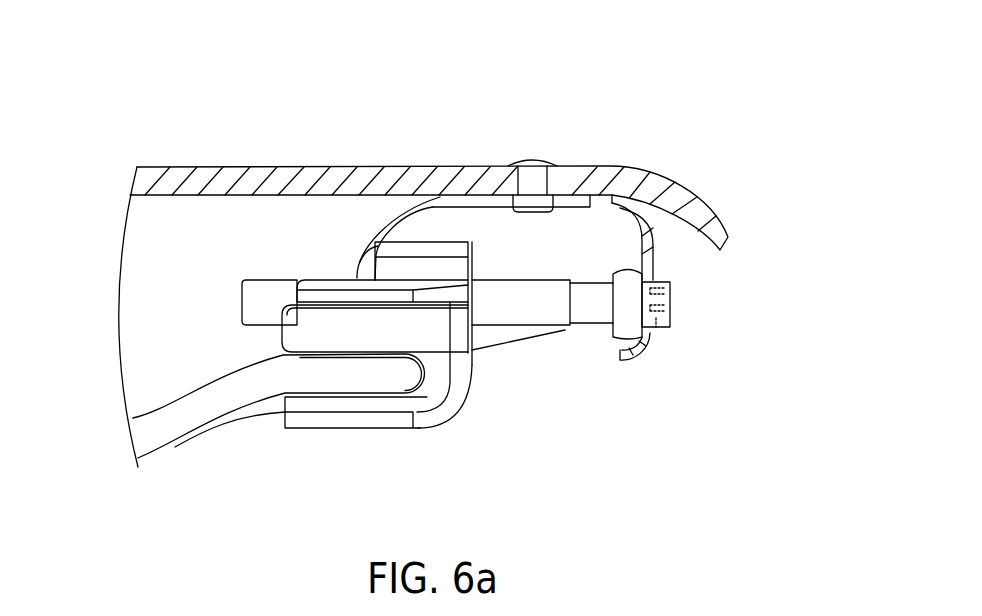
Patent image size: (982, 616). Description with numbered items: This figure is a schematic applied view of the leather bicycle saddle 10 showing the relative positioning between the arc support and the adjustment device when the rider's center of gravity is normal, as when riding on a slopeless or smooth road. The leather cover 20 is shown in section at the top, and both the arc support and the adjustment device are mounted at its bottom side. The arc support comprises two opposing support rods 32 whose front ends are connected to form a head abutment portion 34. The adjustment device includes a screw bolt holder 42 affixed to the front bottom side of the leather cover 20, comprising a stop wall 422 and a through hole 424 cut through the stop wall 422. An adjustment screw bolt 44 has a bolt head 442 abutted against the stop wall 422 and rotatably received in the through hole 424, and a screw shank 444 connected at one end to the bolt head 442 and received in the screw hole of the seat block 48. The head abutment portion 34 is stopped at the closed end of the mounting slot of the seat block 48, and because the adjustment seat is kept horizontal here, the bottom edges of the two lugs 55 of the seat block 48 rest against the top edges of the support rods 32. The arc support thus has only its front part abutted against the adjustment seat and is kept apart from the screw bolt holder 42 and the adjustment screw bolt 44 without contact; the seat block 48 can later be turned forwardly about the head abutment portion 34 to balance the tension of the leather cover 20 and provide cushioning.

The leather bicycle saddle 10 is at (630, 91).
The leather cover 20 is at (392, 170).
The support rods 32 is at (335, 378).
The head abutment portion 34 is at (408, 380).
The screw bolt holder 42 is at (793, 205).
The stop wall 422 is at (655, 245).
The through hole 424 is at (672, 279).
The adjustment screw bolt 44 is at (665, 328).
The bolt head 442 is at (622, 323).
The screw shank 444 is at (253, 297).
The seat block 48 is at (462, 368).
The lugs 55 is at (293, 328).